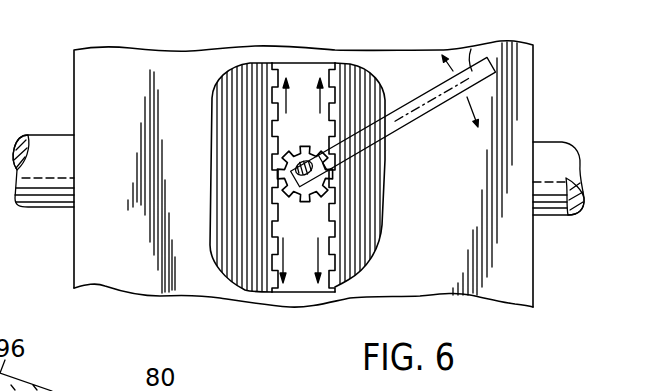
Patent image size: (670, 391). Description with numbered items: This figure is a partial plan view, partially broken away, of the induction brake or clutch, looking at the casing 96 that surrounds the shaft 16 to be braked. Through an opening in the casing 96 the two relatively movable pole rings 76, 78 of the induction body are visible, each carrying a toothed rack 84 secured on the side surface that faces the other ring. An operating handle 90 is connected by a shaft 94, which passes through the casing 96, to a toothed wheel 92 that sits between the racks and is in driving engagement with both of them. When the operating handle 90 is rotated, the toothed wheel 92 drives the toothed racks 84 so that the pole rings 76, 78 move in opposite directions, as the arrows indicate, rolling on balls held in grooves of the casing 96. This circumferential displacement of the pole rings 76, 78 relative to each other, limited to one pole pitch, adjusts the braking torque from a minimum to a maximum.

The shaft 16 is at (568, 148).
The pole ring 76 is at (360, 87).
The pole ring 78 is at (244, 80).
The toothed racks 84 is at (275, 222).
The operating handle 90 is at (470, 50).
The toothed wheel 92 is at (333, 187).
The shaft 94 is at (301, 200).
The casing 96 is at (518, 277).